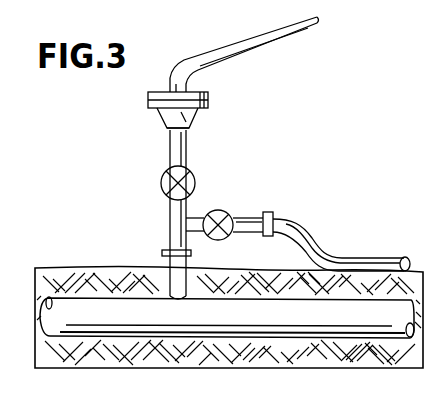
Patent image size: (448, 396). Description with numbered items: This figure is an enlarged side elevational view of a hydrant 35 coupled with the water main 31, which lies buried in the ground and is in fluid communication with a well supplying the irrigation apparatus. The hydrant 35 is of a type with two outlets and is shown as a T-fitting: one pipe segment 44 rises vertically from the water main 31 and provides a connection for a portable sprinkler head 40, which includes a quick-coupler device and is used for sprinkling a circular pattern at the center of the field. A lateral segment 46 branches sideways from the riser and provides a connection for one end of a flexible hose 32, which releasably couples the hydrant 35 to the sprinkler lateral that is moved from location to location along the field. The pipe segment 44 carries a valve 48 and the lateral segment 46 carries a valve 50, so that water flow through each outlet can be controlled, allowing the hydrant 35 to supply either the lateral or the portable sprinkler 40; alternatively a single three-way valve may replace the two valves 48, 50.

The water main 31 is at (112, 318).
The flexible hose 32 is at (322, 250).
The hydrant 35 is at (198, 210).
The portable sprinkler head 40 is at (196, 119).
The pipe segment 44 is at (170, 150).
The lateral segment 46 is at (254, 215).
The valve 48 is at (162, 186).
The valve 50 is at (226, 239).